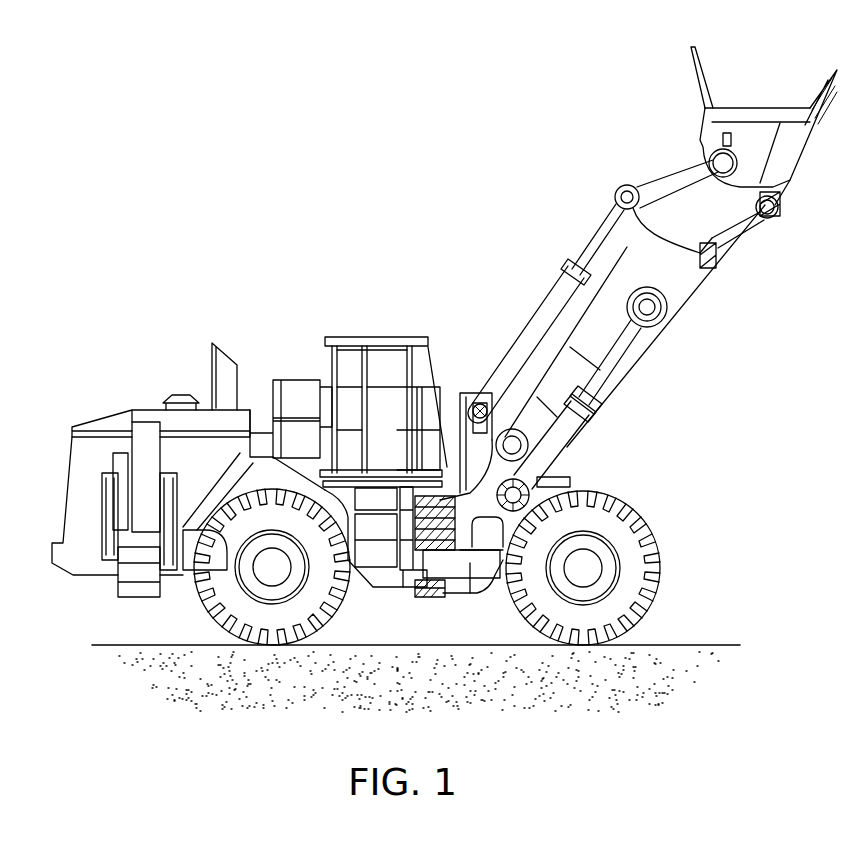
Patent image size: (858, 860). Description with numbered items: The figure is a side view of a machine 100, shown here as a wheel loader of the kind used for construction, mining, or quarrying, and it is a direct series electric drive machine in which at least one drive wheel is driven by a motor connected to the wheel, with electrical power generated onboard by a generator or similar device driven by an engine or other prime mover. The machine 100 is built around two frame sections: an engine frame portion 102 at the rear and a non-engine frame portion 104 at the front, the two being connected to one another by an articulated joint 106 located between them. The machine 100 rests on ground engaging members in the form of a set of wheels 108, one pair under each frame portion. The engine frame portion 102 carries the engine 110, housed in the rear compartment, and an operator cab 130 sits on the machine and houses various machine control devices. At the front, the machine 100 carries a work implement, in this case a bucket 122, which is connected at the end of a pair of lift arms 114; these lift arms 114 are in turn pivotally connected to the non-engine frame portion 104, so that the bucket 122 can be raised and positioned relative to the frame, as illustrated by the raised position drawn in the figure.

The machine 100 is at (529, 118).
The engine frame portion 102 is at (161, 350).
The non-engine frame portion 104 is at (487, 587).
The articulated joint 106 is at (432, 606).
The wheels 108 is at (333, 608).
The engine 110 is at (147, 408).
The lift arms 114 is at (673, 287).
The bucket 122 is at (740, 112).
The operator cab 130 is at (373, 337).